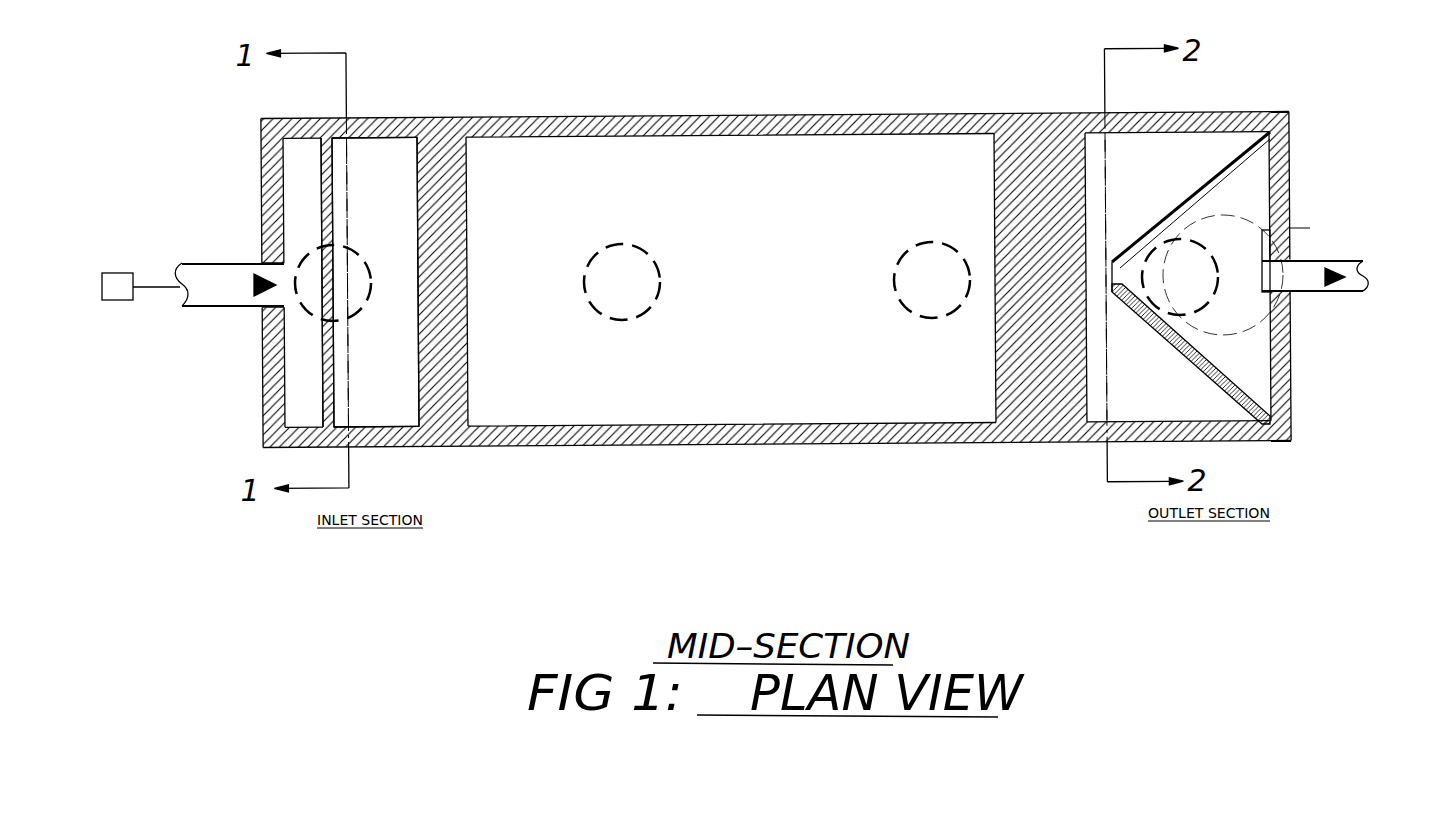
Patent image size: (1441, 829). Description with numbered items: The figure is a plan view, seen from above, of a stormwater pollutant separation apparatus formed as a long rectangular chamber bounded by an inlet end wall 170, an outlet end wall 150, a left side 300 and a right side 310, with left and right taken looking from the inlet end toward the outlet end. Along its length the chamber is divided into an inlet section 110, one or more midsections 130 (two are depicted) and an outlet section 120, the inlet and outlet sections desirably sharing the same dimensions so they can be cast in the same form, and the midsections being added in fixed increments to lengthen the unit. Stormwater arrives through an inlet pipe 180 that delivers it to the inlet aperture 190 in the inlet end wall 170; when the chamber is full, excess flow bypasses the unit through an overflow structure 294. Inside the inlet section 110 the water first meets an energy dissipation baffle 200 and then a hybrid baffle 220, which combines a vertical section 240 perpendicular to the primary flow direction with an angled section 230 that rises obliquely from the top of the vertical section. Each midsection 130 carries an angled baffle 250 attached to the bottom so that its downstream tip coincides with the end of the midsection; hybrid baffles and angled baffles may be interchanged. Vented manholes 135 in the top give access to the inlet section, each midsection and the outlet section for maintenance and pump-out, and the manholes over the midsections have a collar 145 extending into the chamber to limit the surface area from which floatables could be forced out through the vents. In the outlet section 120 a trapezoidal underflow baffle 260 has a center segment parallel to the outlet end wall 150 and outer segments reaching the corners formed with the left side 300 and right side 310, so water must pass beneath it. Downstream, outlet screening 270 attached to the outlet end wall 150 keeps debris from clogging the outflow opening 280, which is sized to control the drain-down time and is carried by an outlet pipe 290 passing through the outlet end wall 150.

The inlet section 110 is at (377, 92).
The outlet section 120 is at (1228, 88).
The midsection 130 is at (633, 90).
The manhole 135 is at (1198, 242).
The collar 145 is at (777, 287).
The outlet end wall 150 is at (1290, 147).
The inlet end wall 170 is at (262, 378).
The inlet pipe 180 is at (243, 308).
The inlet aperture 190 is at (282, 282).
The energy dissipation baffle 200 is at (333, 196).
The hybrid baffle 220 is at (467, 340).
The angled section of hybrid baffle 230 is at (445, 382).
The vertical section of hybrid baffle 240 is at (418, 393).
The angled baffle 250 is at (995, 363).
The trapezoidal underflow baffle 260 is at (1175, 347).
The outlet screening 270 is at (1217, 247).
The outflow opening 280 is at (1260, 290).
The outlet pipe 290 is at (1341, 256).
The overflow structure 294 is at (141, 255).
The left side 300 is at (860, 113).
The right side 310 is at (712, 444).